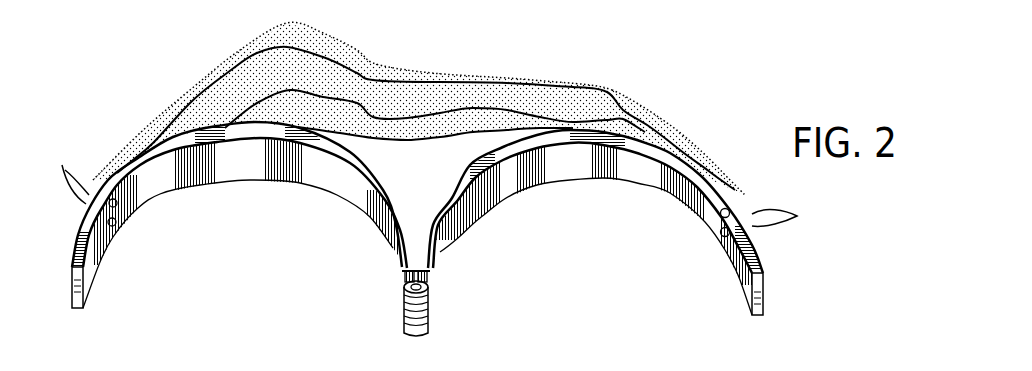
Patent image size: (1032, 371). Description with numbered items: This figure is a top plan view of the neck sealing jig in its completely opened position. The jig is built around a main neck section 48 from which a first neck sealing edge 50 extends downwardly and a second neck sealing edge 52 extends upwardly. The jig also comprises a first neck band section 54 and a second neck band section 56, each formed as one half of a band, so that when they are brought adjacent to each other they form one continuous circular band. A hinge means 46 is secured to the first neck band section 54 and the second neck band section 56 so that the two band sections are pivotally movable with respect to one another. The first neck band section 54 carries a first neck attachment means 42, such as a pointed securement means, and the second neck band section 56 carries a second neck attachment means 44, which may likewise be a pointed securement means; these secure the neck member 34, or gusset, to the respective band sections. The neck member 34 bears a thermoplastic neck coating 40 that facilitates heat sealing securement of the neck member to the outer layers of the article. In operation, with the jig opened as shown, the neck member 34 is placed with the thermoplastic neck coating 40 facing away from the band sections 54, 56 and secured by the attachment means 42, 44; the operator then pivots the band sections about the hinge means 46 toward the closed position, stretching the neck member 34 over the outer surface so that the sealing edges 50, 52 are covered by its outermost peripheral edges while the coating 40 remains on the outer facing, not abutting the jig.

The neck member 34 is at (387, 96).
The thermoplastic neck coating 40 is at (660, 121).
The first neck attachment means 42 is at (70, 167).
The second neck attachment means 44 is at (797, 216).
The hinge means 46 is at (432, 302).
The main neck section 48 is at (262, 166).
The first neck sealing edge 50 is at (217, 130).
The second neck sealing edge 52 is at (373, 243).
The first neck band section 54 is at (305, 180).
The second neck band section 56 is at (641, 175).